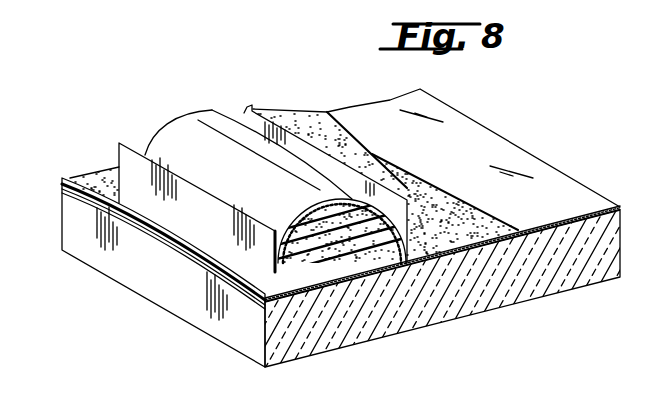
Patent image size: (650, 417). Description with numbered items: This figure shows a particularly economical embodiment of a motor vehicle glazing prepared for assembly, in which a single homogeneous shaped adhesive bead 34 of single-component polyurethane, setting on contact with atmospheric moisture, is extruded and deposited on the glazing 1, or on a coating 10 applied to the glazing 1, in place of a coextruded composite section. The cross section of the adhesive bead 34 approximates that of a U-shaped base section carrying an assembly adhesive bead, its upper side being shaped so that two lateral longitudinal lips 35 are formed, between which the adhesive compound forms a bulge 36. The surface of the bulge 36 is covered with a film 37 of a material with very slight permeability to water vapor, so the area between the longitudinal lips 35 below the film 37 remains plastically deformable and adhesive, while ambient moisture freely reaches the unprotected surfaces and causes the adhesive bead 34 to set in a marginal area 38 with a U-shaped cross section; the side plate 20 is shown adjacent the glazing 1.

The glazing 1 is at (463, 297).
The coating 10 is at (440, 195).
The side wall plate 20 is at (125, 257).
The adhesive bead 34 is at (322, 263).
The lateral longitudinal lips 35 is at (123, 162).
The bulge 36 is at (367, 200).
The film 37 is at (352, 200).
The marginal area 38 is at (268, 272).